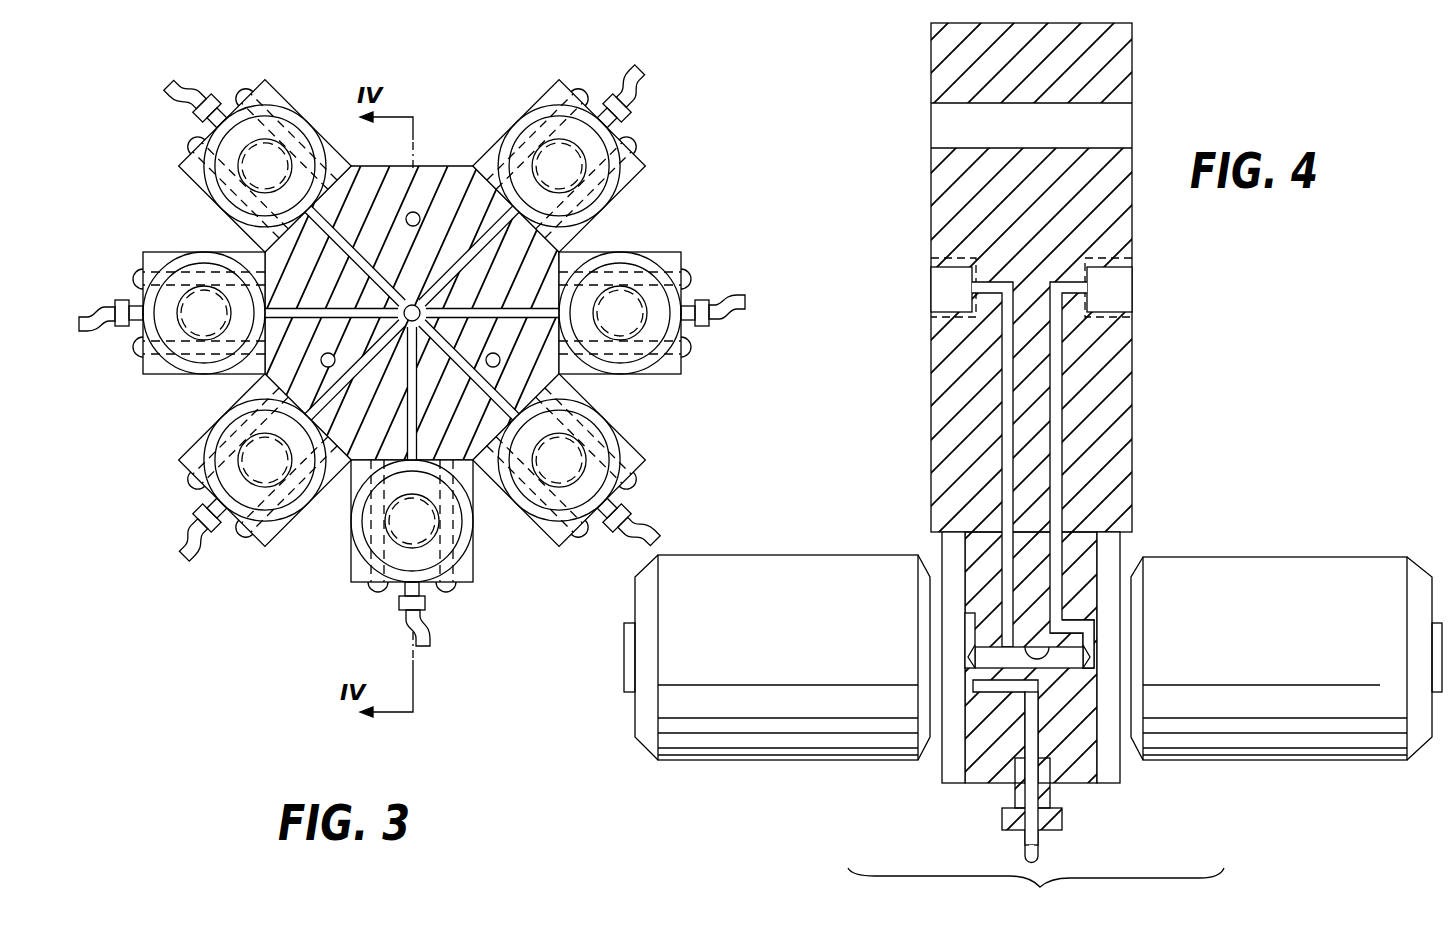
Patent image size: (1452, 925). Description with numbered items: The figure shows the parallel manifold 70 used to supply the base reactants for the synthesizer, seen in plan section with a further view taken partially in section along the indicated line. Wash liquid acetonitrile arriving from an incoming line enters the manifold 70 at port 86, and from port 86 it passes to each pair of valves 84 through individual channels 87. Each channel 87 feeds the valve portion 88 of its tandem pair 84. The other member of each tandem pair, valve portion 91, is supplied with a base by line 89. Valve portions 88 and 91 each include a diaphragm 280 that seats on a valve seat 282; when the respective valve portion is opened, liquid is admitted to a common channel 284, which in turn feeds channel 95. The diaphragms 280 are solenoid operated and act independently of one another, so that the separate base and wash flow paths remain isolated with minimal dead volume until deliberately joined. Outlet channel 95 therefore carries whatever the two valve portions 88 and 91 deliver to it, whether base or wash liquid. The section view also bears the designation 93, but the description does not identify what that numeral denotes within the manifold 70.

In FIG. 3, the manifold 70 is at (450, 146).
In FIG. 4, the manifold 70 is at (744, 450).
In FIG. 3, the central hub / inlet port 93 is at (420, 302).
In FIG. 4, the central hub / inlet port 93 is at (948, 302).
In FIG. 3, the valve portion 91 is at (657, 249).
In FIG. 4, the valve portion 91 is at (830, 766).
In FIG. 4, the port 86 is at (1116, 304).
In FIG. 4, the outlet channel 95 is at (980, 384).
In FIG. 4, the channel 87 is at (1064, 476).
In FIG. 4, the common channel 284 is at (1070, 630).
In FIG. 4, the valve seat 282 is at (971, 617).
In FIG. 4, the diaphragm 280 is at (1090, 657).
In FIG. 4, the valve portion 88 is at (1271, 764).
In FIG. 4, the line 89 is at (1042, 858).
In FIG. 4, the tandem pair of valves 84 is at (1224, 868).